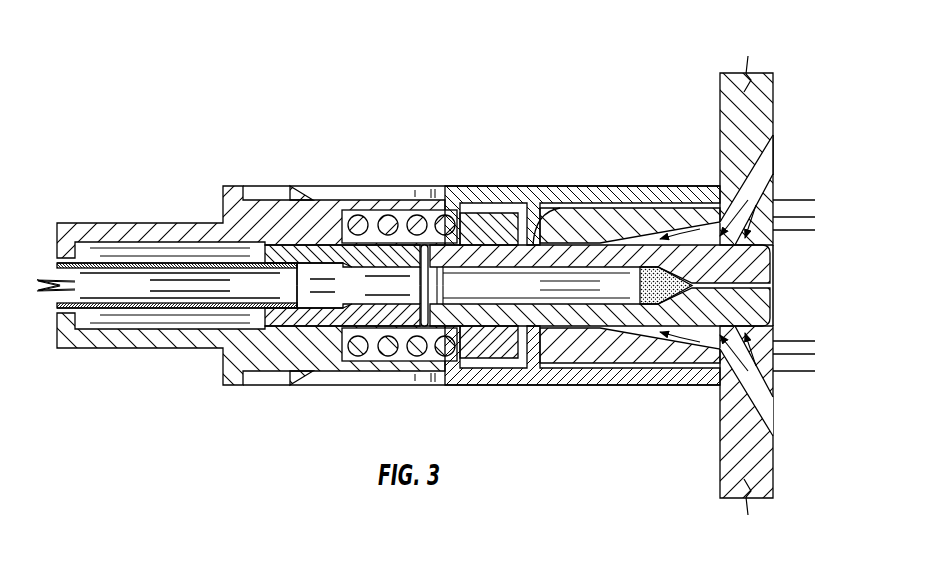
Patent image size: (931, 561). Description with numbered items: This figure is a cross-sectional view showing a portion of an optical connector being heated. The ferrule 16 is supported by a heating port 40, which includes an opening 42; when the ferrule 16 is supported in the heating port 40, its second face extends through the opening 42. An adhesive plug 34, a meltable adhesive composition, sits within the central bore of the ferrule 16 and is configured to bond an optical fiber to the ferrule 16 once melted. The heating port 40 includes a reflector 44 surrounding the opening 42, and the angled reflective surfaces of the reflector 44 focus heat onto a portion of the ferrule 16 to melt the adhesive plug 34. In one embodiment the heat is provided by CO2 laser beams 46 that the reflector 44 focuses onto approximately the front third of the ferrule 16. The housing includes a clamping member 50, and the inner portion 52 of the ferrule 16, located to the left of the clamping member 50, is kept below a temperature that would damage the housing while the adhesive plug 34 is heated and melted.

The ferrule 16 is at (695, 317).
The adhesive plug 34 is at (650, 300).
The heating port 40 is at (745, 89).
The opening 42 is at (783, 178).
The reflector 44 is at (766, 157).
The CO2 laser beams 46 is at (797, 199).
The clamping member 50 is at (532, 242).
The inner portion 52 is at (427, 385).